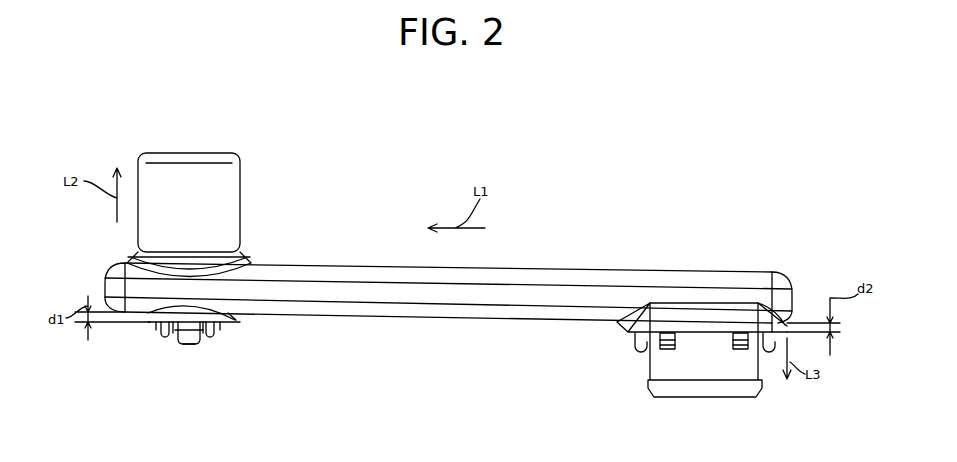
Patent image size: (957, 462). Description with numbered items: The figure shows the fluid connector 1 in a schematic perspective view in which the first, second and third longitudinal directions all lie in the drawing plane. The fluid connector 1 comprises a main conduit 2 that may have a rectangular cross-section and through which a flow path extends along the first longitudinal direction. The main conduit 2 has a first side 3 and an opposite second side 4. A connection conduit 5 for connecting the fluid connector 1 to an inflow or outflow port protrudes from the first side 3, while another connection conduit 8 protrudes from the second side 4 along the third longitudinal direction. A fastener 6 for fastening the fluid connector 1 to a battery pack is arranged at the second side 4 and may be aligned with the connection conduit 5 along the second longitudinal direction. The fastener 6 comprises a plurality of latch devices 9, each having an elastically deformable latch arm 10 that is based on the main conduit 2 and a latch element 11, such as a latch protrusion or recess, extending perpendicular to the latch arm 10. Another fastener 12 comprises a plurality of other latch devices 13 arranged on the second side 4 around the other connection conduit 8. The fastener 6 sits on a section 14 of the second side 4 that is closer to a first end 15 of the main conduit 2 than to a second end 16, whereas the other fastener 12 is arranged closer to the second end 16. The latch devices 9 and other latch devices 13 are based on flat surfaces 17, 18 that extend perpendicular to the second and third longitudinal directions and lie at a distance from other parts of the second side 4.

The fluid connector 1 is at (452, 379).
The main conduit 2 is at (486, 333).
The first side 3 is at (617, 270).
The second side 4 is at (362, 320).
The connection conduit 5 is at (194, 143).
The fastener 6 is at (178, 363).
The other connection conduit 8 is at (613, 383).
The latch device 9 is at (158, 335).
The latch arm 10 is at (145, 342).
The latch element 11 is at (163, 336).
The other fastener 12 is at (620, 353).
The other latch devices 13 is at (772, 348).
The section 14 is at (184, 395).
The first end 15 is at (105, 288).
The second end 16 is at (792, 290).
The surface 17 is at (637, 340).
The surface 18 is at (173, 342).